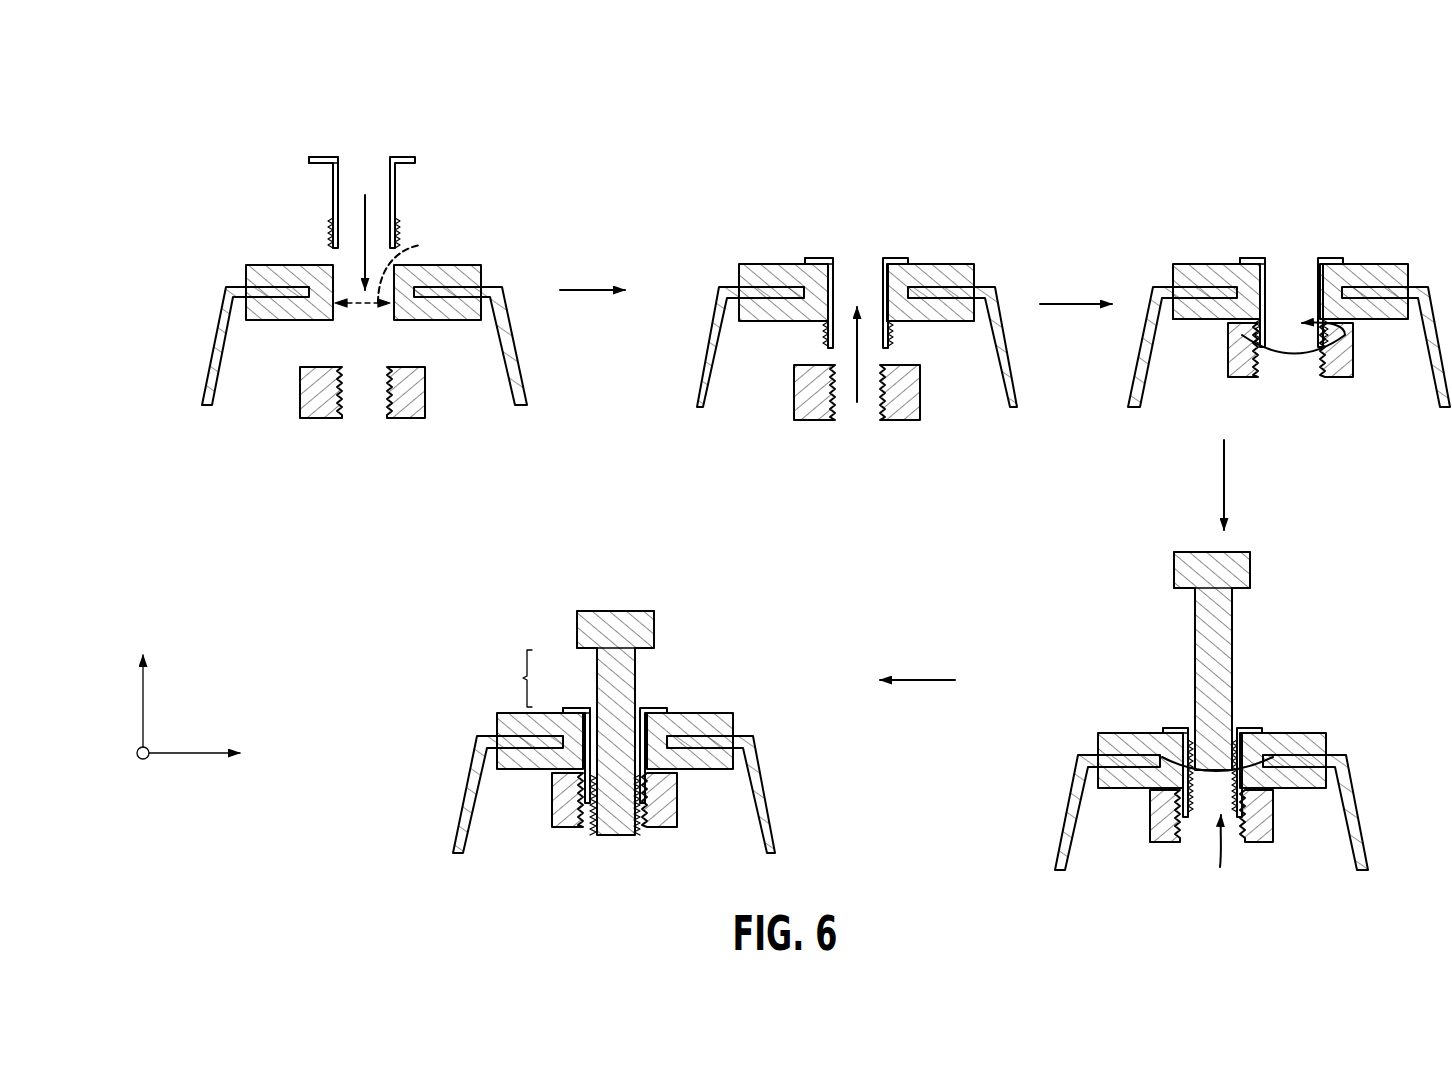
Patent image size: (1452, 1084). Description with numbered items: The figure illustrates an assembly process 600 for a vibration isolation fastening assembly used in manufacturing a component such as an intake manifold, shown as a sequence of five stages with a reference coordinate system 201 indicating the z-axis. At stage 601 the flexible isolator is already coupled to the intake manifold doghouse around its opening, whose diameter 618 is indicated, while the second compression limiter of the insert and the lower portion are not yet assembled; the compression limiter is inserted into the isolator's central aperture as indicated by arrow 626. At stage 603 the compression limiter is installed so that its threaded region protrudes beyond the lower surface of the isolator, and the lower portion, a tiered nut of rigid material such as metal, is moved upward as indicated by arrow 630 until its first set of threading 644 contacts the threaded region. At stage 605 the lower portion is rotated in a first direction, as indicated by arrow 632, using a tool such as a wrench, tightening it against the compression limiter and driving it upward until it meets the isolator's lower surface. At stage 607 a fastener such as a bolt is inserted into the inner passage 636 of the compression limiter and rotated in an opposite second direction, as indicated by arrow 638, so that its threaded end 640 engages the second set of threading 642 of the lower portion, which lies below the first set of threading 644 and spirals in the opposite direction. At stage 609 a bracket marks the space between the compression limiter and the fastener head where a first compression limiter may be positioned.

The coordinate system 201 is at (178, 695).
The assembly process 600 is at (152, 135).
The first step of the process 601 is at (260, 162).
The second step of the process 603 is at (745, 200).
The third step of the process 605 is at (1176, 167).
The fourth step of the process 607 is at (1108, 562).
The fifth step of the process 609 is at (508, 618).
The diameter 618 is at (422, 245).
The arrow 626 is at (368, 222).
The arrow 630 is at (857, 372).
The arrow 632 is at (1282, 347).
The inner passage 636 is at (1221, 867).
The arrow 638 is at (1230, 755).
The threaded end 640 is at (1205, 733).
The second set of threading 642 is at (1197, 840).
The first set of threading 644 is at (1195, 830).